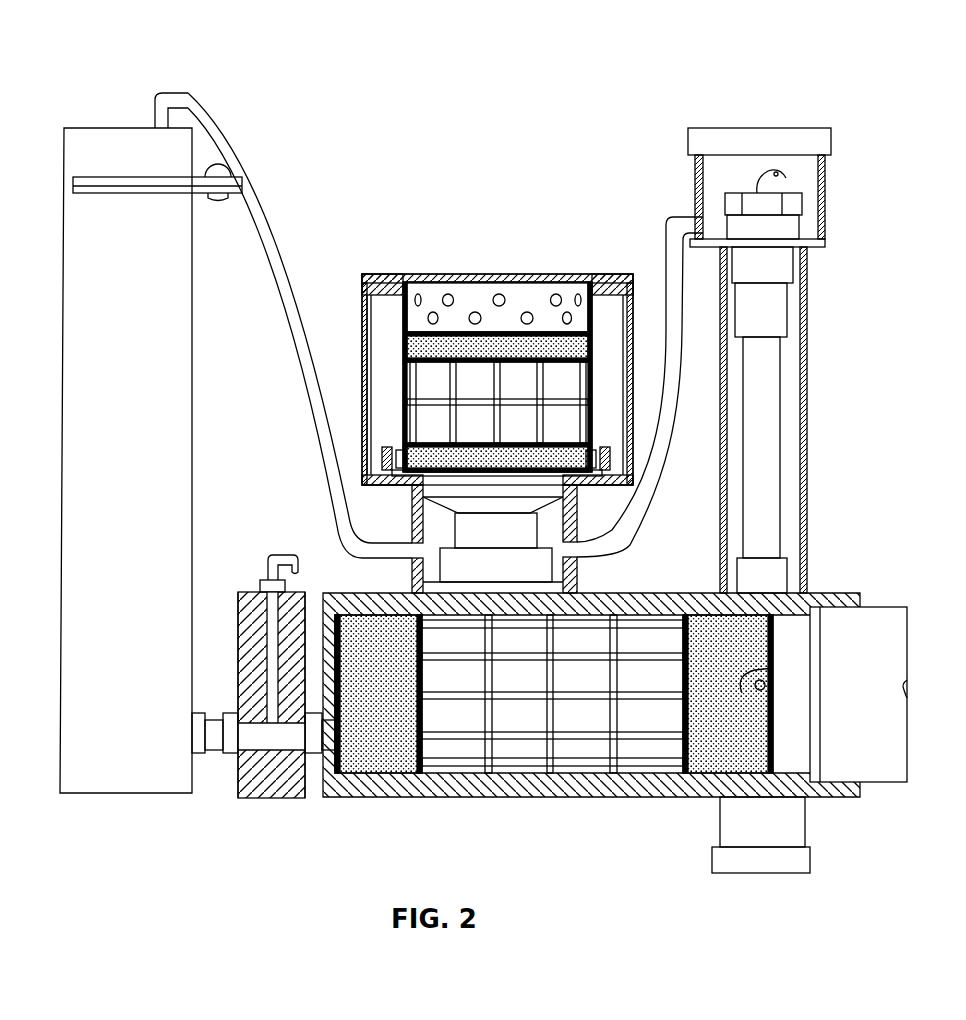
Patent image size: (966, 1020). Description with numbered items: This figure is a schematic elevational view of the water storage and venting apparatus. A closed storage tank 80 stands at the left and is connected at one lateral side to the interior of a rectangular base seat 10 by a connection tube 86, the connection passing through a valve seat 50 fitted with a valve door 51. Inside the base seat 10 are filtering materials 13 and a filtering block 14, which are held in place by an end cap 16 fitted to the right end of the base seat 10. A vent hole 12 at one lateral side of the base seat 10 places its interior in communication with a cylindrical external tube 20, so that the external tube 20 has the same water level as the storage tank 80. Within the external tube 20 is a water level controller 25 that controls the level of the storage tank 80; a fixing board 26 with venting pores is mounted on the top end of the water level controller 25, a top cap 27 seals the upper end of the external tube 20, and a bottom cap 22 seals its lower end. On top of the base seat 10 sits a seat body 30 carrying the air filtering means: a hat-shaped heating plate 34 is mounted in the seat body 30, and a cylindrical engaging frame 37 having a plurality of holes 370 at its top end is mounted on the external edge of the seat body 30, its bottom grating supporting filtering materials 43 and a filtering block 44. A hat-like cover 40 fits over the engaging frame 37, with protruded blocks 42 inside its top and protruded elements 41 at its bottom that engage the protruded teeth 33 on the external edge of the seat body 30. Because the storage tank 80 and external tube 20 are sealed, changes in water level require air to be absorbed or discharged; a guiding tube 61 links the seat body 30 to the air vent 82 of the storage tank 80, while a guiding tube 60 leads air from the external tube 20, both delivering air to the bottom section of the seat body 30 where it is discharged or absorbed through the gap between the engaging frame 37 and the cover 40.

The base seat 10 is at (563, 782).
The vent hole 12 is at (765, 683).
The filtering materials 13 is at (369, 775).
The filtering block 14 is at (515, 740).
The end cap 16 is at (888, 656).
The external tube 20 is at (808, 280).
The bottom cap 22 is at (765, 872).
The water level controller 25 is at (765, 360).
The fixing board 26 is at (775, 240).
The top cap 27 is at (790, 128).
The seat body 30 is at (412, 518).
The protruded teeth 33 is at (372, 462).
The heating plate 34 is at (518, 533).
The engaging frame 37 is at (527, 300).
The holes 370 is at (475, 312).
The cover 40 is at (362, 372).
The protruded elements 41 is at (375, 487).
The protruded blocks 42 is at (383, 300).
The filtering materials 43 is at (433, 318).
The filtering block 44 is at (470, 383).
The valve seat 50 is at (264, 798).
The valve door 51 is at (268, 563).
The guiding tube 60 is at (673, 420).
The guiding tube 61 is at (250, 170).
The storage tank 80 is at (86, 427).
The air vent 82 is at (170, 95).
The connection tube 86 is at (207, 735).